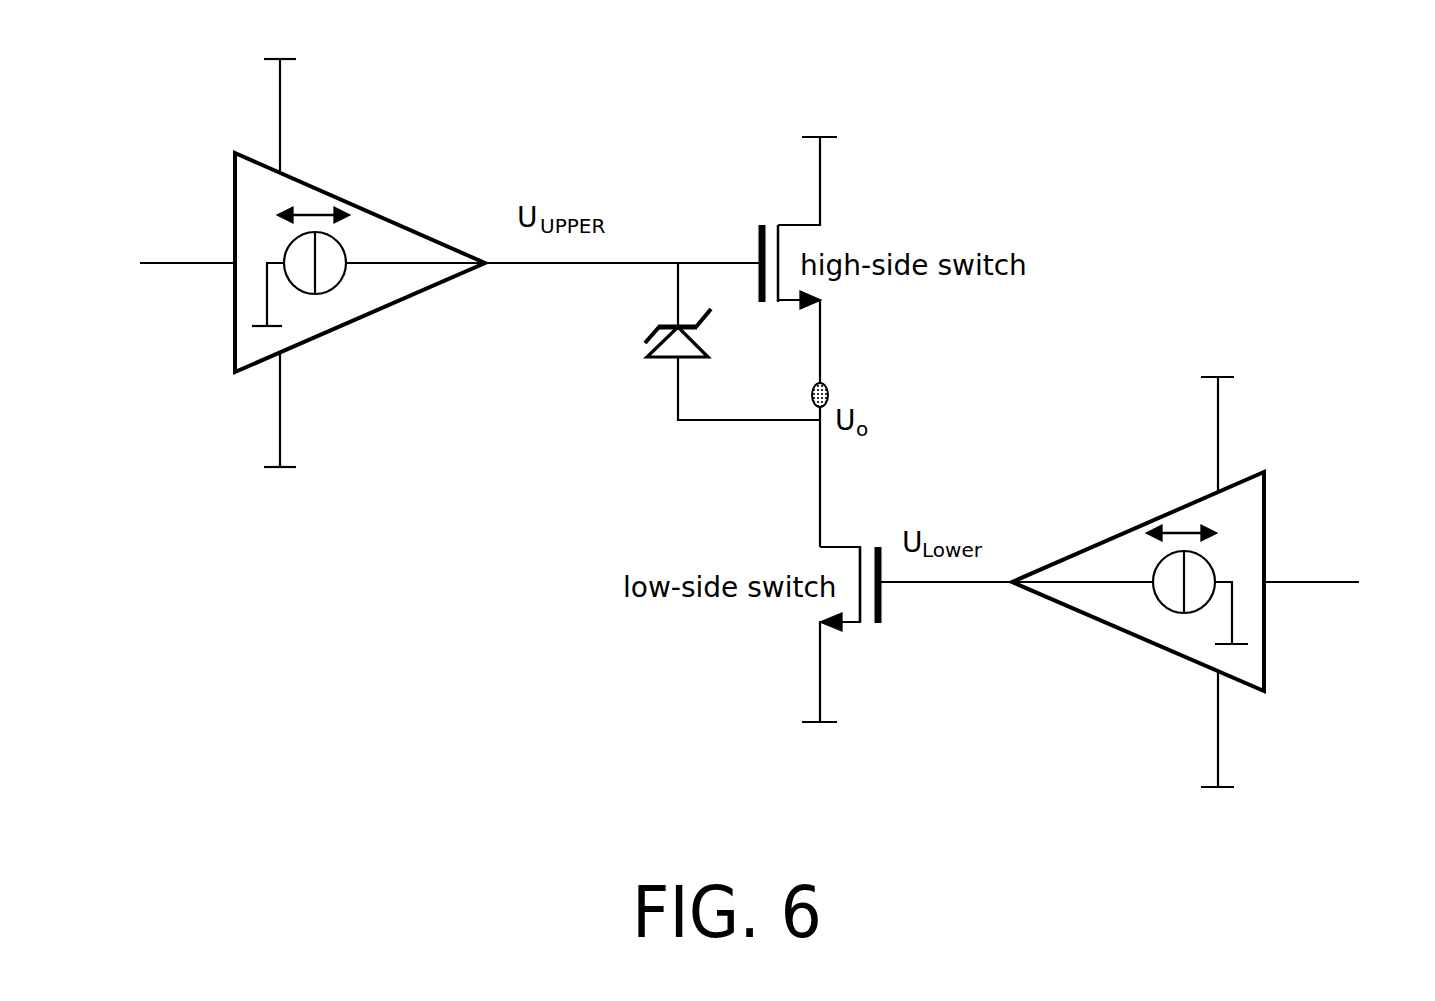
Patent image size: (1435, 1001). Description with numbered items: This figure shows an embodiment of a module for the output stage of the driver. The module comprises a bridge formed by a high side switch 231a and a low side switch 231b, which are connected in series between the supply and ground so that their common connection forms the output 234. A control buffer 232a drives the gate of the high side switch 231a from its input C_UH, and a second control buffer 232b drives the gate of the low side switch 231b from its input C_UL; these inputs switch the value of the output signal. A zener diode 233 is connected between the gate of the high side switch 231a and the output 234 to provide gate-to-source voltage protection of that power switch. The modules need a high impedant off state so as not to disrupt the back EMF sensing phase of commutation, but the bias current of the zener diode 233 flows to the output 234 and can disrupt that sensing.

The high side switch 231a is at (758, 224).
The low side switch 231b is at (880, 625).
The control buffer 232a is at (365, 207).
The control buffer 232b is at (1172, 510).
The zener diode 233 is at (657, 362).
The output 234 is at (827, 387).